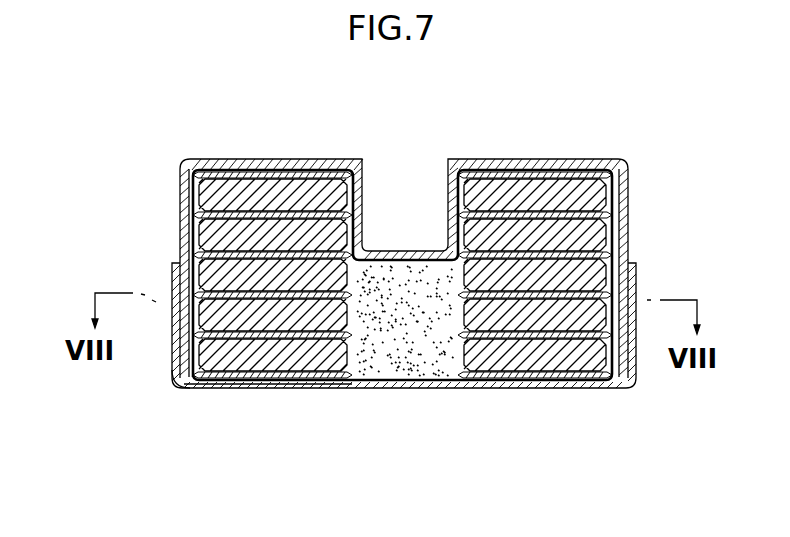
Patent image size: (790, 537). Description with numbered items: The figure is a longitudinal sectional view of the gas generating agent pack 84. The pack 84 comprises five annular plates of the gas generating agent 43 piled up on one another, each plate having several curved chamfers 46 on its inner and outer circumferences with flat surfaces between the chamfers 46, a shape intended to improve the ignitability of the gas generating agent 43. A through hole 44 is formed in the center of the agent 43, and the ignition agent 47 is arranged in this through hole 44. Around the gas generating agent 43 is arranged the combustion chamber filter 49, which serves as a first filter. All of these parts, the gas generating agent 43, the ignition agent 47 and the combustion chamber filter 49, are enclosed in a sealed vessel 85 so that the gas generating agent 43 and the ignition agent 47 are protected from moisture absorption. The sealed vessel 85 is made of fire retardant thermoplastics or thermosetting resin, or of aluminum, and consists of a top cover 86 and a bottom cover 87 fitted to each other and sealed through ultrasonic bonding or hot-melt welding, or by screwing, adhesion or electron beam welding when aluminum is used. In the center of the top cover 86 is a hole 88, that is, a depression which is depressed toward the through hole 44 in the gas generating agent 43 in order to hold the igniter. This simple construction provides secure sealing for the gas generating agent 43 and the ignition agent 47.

The gas generating agent 43 is at (574, 362).
The through hole 44 is at (362, 357).
The curved chamfers 46 is at (203, 168).
The ignition agent 47 is at (407, 337).
The combustion chamber filter 49 is at (174, 352).
The gas generating agent pack 84 is at (503, 388).
The sealed vessel 85 is at (633, 220).
The top cover 86 is at (569, 161).
The bottom cover 87 is at (232, 388).
The hole 88 is at (368, 203).